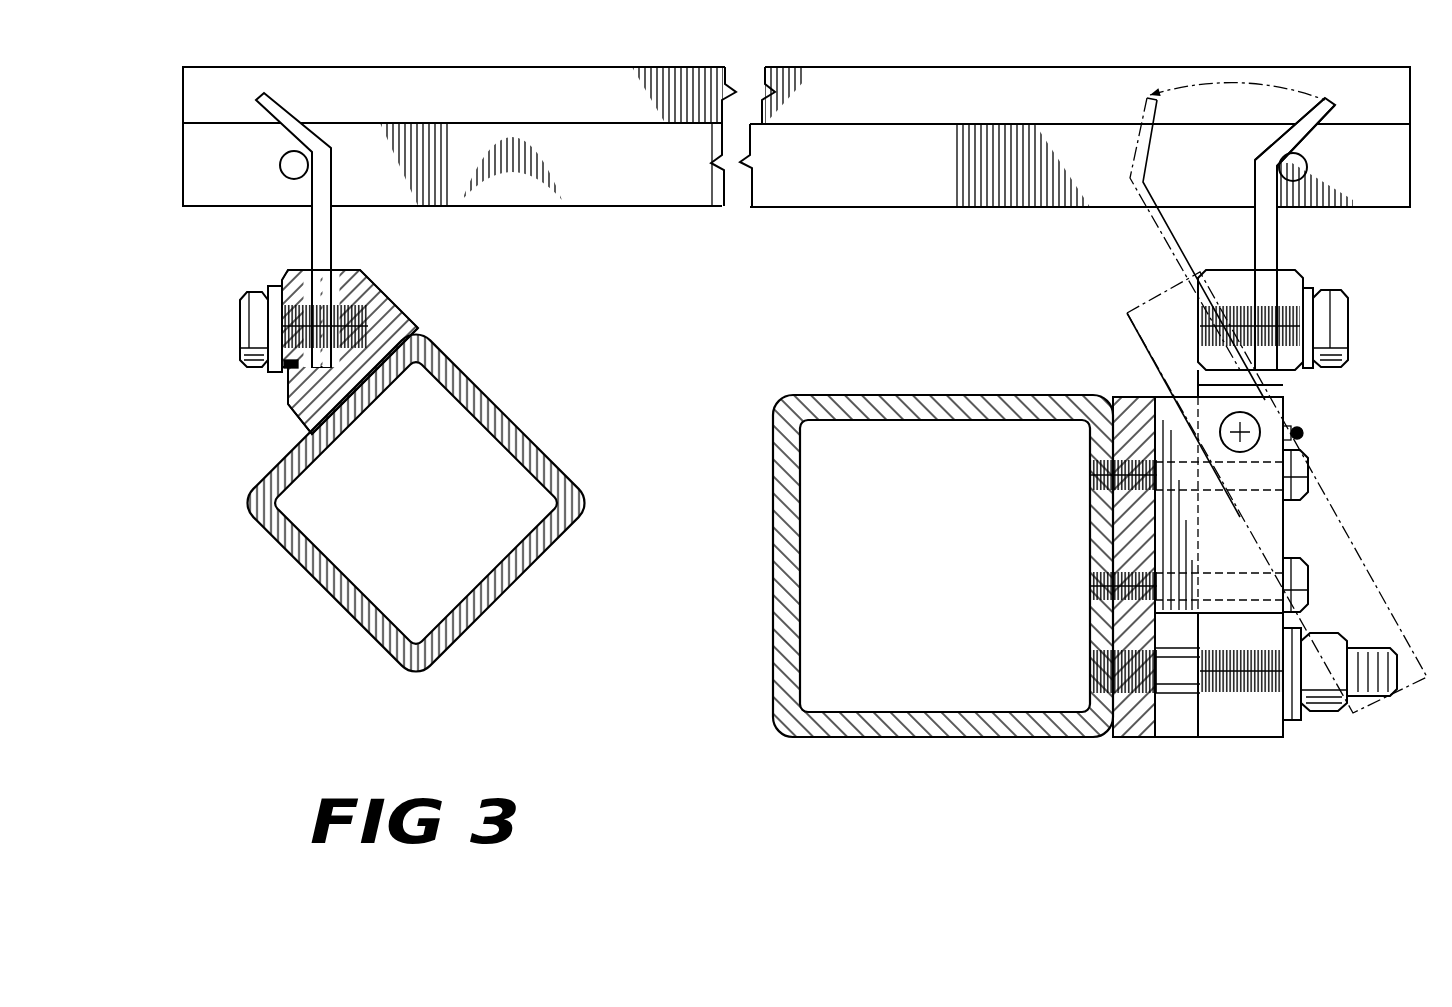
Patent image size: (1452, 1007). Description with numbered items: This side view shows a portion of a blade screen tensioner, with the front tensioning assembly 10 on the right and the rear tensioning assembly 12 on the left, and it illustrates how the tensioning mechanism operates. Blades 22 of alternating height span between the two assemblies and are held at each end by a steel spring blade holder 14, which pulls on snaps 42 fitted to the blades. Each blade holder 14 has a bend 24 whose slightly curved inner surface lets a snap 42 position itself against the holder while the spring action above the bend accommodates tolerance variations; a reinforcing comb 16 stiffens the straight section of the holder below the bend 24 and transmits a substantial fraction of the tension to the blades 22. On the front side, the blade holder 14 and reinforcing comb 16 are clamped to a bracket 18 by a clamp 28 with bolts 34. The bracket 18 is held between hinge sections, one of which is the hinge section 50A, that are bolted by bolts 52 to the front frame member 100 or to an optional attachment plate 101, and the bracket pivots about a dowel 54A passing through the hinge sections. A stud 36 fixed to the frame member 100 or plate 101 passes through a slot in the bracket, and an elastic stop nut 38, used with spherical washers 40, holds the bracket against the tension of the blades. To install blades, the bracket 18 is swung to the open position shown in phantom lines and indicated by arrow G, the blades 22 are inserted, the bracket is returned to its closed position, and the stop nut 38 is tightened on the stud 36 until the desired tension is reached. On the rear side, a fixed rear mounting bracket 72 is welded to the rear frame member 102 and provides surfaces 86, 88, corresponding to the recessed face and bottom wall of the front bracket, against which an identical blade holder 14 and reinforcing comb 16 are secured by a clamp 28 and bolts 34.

The front tensioning assembly 10 is at (1115, 296).
The rear tensioning assembly 12 is at (172, 292).
The spring blade holder 14 is at (1307, 130).
The reinforcing comb 16 is at (333, 258).
The bracket 18 is at (1340, 545).
The blades 22 is at (463, 137).
The bend 24 is at (323, 155).
The clamp 28 is at (280, 283).
The bolts 34 is at (250, 330).
The stud 36 is at (1172, 700).
The elastic stop nut 38 is at (1333, 713).
The spherical washers 40 is at (1297, 720).
The snaps 42 is at (292, 178).
The hinge section 50A is at (1247, 727).
The bolts 52 is at (1310, 475).
The dowel 54A is at (1228, 422).
The rear mounting bracket 72 is at (400, 323).
The surface 86 is at (352, 264).
The surface 88 is at (280, 369).
The front frame member 100 is at (998, 737).
The attachment plate 101 is at (1136, 738).
The rear frame member 102 is at (320, 578).
The arrow G is at (1215, 84).